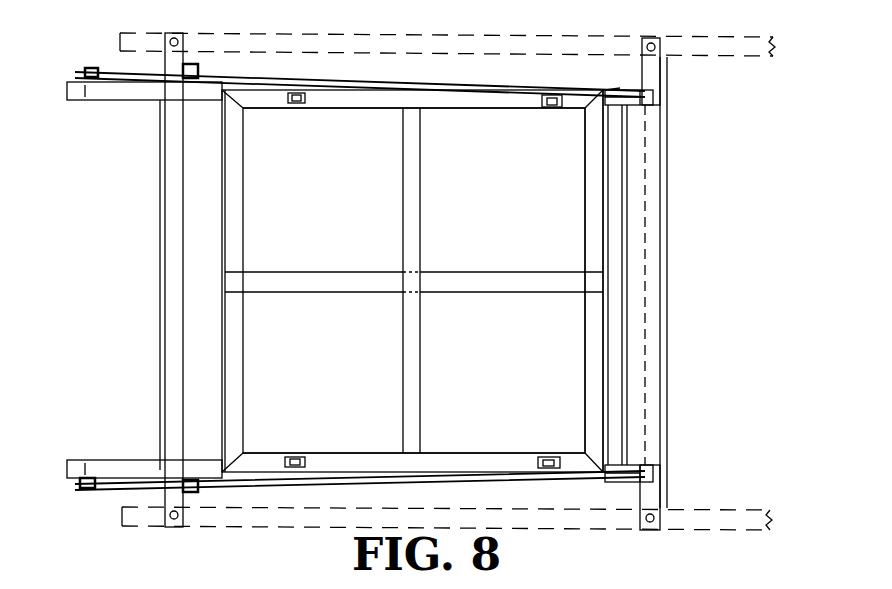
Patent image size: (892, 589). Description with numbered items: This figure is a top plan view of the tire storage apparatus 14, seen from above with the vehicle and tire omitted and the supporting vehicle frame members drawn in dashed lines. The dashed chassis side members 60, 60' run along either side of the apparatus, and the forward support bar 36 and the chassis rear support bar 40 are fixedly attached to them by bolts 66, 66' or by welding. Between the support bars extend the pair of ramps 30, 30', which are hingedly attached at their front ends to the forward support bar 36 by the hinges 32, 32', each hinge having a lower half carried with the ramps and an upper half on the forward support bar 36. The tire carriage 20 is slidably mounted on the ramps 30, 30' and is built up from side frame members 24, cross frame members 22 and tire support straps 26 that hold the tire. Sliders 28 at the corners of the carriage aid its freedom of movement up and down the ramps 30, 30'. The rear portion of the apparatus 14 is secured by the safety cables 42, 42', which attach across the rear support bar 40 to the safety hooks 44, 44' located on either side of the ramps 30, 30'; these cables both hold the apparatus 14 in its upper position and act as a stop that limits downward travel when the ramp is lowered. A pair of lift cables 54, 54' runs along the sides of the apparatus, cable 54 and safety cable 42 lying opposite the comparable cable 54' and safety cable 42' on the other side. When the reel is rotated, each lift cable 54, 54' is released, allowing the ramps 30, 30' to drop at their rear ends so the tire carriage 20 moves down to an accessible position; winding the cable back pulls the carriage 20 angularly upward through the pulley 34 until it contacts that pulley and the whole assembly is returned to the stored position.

The tire storage apparatus 14 is at (130, 196).
The tire carriage 20 is at (394, 281).
The cross frame members 22 is at (595, 173).
The side frame members 24 is at (455, 103).
The tire support straps 26 is at (412, 255).
The sliders 28 is at (297, 104).
The ramp 30 is at (144, 447).
The ramp 30' is at (144, 111).
The hinge 32 is at (666, 497).
The hinge 32' is at (664, 71).
The pulley 34 is at (618, 90).
The forward support bar 36 is at (667, 370).
The rear support bar 40 is at (172, 243).
The safety cable 42 is at (143, 496).
The safety cable 42' is at (138, 57).
The safety hook 44 is at (70, 495).
The safety hook 44' is at (79, 96).
The cable 54 is at (360, 488).
The cable 54' is at (360, 76).
The chassis side member 60 is at (459, 505).
The chassis side member 60' is at (418, 32).
The bolts 66 is at (193, 535).
The bolts 66' is at (192, 24).